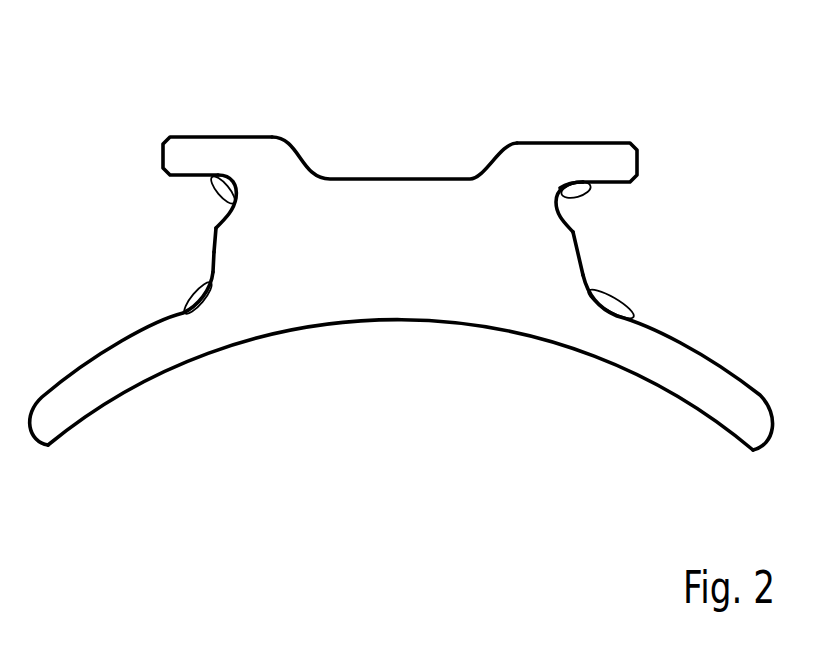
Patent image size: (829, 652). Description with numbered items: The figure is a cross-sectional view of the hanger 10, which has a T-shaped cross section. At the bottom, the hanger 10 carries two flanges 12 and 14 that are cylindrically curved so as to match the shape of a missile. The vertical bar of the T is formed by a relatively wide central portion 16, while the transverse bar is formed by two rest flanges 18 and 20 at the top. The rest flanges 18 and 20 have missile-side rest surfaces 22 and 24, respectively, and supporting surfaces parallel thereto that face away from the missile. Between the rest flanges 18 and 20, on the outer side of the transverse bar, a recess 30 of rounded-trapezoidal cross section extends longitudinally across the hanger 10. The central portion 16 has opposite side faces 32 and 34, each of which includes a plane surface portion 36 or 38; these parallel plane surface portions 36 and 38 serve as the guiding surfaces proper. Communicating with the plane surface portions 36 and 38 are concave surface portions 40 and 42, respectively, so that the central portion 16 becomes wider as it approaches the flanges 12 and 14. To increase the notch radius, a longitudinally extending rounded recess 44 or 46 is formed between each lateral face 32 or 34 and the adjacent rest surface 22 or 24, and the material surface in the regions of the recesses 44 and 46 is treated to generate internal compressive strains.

The hanger 10 is at (602, 262).
The flange 12 is at (115, 338).
The flange 14 is at (670, 335).
The central portion 16 is at (387, 293).
The rest flange 18 is at (222, 137).
The rest flange 20 is at (585, 145).
The rest surface 22 is at (218, 177).
The rest surface 24 is at (578, 243).
The recess 30 is at (404, 160).
The side face 32 is at (212, 253).
The side face 34 is at (583, 274).
The plane surface portion 36 is at (213, 233).
The plane surface portion 38 is at (600, 184).
The concave surface portion 40 is at (186, 310).
The concave surface portion 42 is at (633, 325).
The rounded recess 44 is at (215, 178).
The rounded recess 46 is at (598, 183).